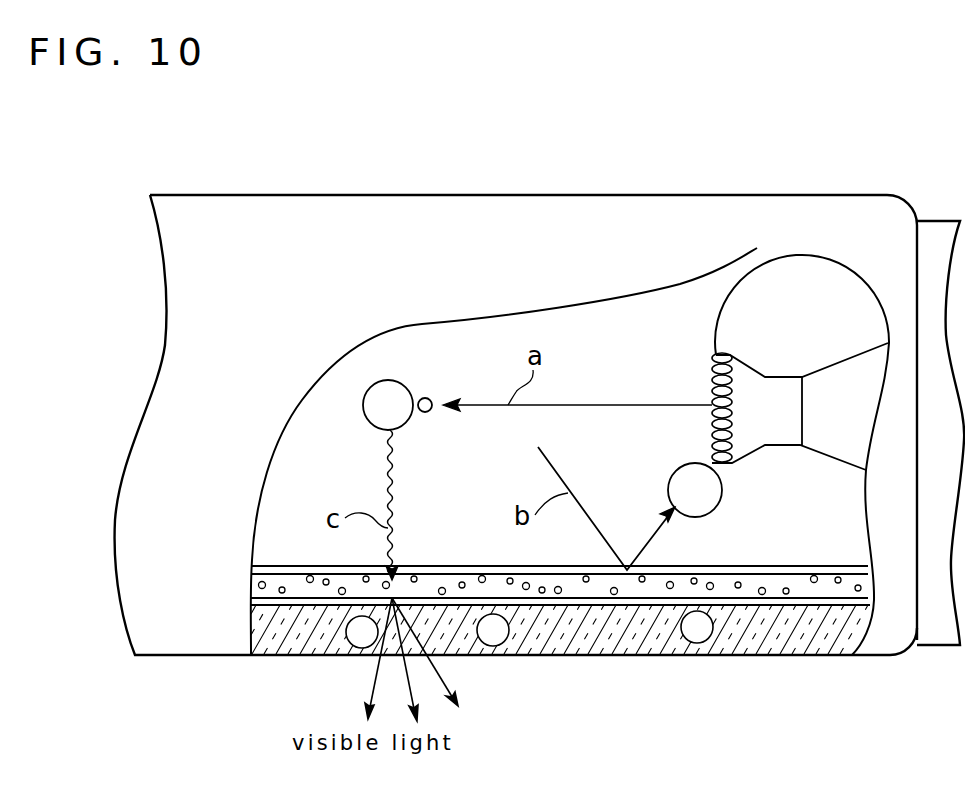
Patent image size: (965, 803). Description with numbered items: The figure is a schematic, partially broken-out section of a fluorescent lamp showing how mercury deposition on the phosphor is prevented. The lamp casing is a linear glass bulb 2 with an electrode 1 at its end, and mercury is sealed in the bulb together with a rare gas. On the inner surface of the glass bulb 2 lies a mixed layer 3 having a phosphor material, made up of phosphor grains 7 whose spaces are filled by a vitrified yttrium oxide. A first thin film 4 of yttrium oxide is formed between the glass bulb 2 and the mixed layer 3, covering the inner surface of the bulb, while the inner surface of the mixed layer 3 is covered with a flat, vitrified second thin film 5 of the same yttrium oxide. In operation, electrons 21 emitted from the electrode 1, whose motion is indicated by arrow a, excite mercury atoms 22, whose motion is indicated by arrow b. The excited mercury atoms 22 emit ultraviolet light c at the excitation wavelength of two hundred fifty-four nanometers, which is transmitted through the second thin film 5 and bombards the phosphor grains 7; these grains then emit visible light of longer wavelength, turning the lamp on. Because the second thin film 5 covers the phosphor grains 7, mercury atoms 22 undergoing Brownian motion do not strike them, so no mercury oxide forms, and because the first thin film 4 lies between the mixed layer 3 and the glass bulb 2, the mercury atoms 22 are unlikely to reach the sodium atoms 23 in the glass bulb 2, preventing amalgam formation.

The electrode 1 is at (738, 268).
The glass bulb 2 is at (580, 640).
The mixed layer 3 is at (660, 590).
The first thin film 4 is at (620, 605).
The second thin film 5 is at (807, 574).
The phosphor grains 7 is at (400, 580).
The electrons 21 is at (430, 398).
The mercury atoms 22 is at (396, 380).
The sodium atoms 23 is at (346, 648).